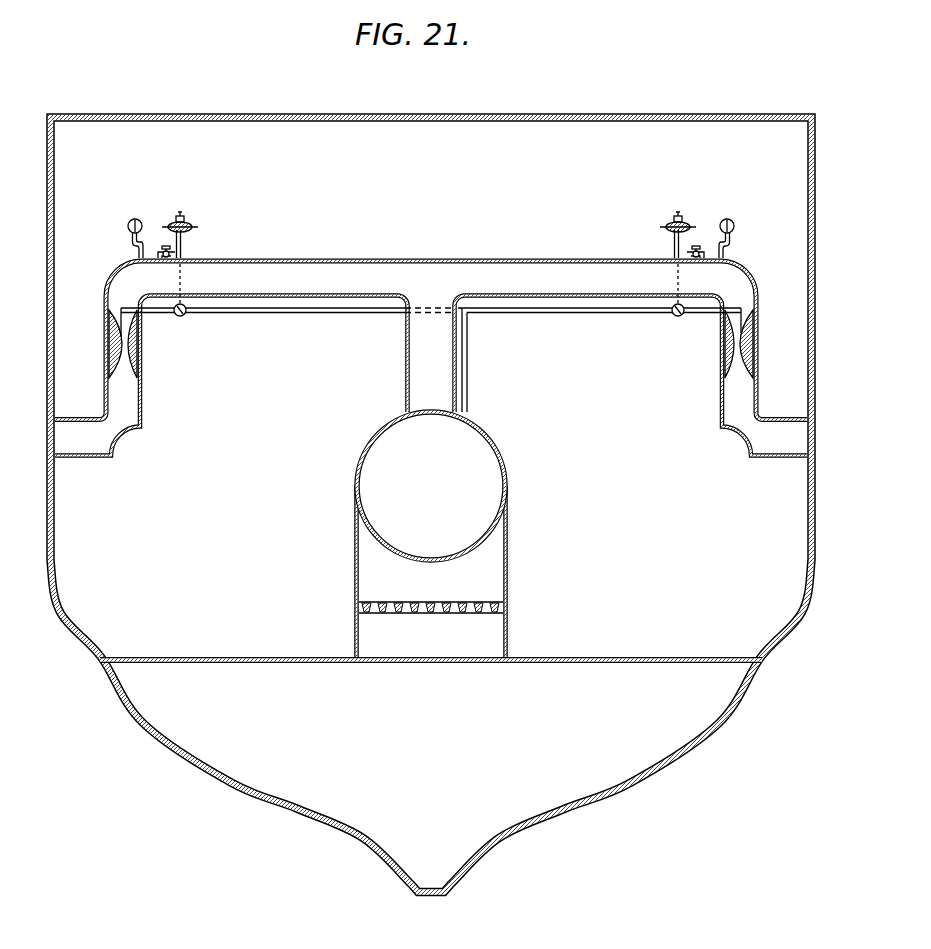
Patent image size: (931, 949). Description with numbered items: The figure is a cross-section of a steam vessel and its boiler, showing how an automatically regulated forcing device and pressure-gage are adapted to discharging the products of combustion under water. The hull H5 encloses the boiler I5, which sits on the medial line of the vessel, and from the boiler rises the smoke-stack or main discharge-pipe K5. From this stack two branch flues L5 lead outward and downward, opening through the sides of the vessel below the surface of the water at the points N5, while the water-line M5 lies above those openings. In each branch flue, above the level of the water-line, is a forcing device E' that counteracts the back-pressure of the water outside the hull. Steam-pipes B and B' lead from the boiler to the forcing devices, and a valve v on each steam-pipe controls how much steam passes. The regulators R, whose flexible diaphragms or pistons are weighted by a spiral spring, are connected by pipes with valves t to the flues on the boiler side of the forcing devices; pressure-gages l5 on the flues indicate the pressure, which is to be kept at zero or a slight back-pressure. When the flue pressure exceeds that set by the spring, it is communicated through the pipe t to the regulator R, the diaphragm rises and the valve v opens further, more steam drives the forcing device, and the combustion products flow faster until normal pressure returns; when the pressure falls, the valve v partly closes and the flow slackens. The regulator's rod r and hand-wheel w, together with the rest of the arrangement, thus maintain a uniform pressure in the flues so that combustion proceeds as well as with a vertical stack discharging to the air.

The hull H5 is at (431, 505).
The boiler I5 is at (431, 534).
The smoke-stack or main discharge-pipe K5 is at (431, 354).
The branch flues L5 is at (431, 337).
The water-line M5 is at (824, 398).
The discharge points N5 is at (827, 438).
The forcing device E' is at (430, 353).
The steam-pipe B' is at (288, 322).
The steam-pipes B is at (599, 360).
The valves v is at (429, 301).
The valve rod r is at (429, 242).
The hand wheel w is at (686, 224).
The regulators R is at (672, 220).
The pipes with valves t is at (700, 252).
The pressure-gages l5 is at (742, 222).